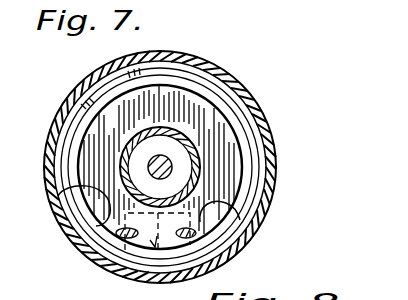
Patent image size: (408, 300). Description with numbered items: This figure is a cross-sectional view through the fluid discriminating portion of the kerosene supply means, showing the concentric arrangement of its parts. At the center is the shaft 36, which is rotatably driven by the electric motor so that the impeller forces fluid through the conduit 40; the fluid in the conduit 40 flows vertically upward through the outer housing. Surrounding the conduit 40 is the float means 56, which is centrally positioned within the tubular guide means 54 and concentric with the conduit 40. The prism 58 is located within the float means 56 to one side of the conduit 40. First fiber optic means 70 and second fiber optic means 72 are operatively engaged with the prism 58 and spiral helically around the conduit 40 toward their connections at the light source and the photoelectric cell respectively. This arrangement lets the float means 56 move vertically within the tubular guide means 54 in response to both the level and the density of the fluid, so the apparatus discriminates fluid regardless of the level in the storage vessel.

The shaft 36 is at (158, 153).
The conduit 40 is at (193, 185).
The tubular guide means 54 is at (231, 78).
The float means 56 is at (224, 136).
The prism 58 is at (97, 265).
The first fiber optic means 70 is at (88, 106).
The second fiber optic means 72 is at (213, 207).